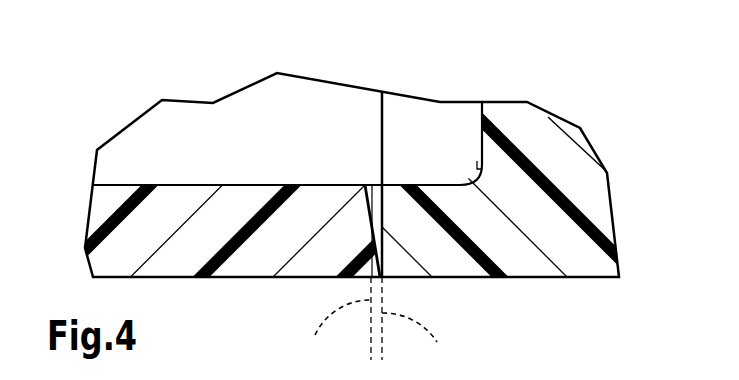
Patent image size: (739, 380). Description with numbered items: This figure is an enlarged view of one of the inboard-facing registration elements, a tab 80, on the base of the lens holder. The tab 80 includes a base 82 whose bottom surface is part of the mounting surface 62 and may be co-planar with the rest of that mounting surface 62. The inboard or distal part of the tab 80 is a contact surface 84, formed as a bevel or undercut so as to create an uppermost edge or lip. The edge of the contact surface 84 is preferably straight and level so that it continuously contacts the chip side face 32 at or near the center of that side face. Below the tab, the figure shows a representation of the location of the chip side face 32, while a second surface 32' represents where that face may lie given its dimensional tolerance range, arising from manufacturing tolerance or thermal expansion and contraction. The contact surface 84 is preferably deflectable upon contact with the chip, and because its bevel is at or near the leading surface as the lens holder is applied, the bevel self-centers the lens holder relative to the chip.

The mounting surface 62 is at (562, 277).
The contact surface 84 is at (366, 197).
The base 82 is at (403, 207).
The tab 80 is at (368, 217).
The side face 32 is at (334, 319).
The tolerance surface 32' is at (422, 321).